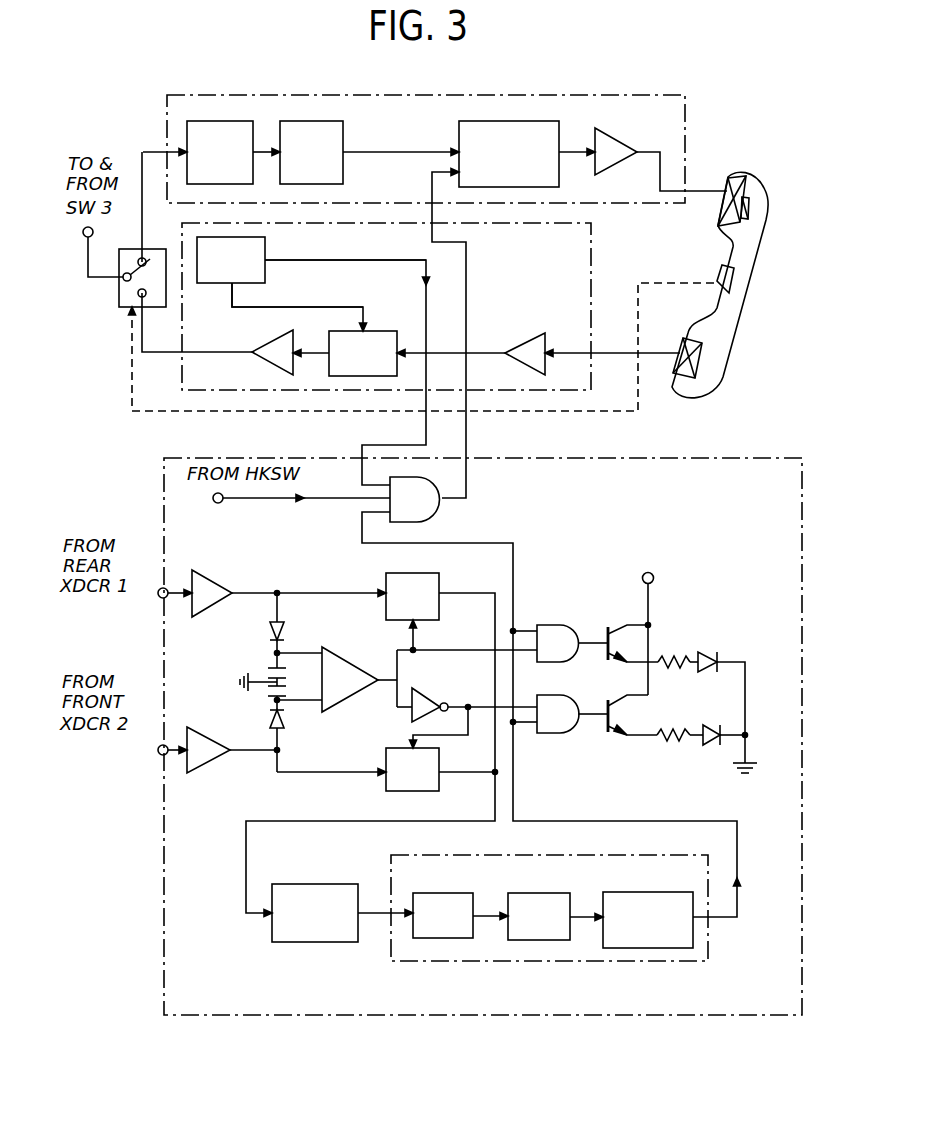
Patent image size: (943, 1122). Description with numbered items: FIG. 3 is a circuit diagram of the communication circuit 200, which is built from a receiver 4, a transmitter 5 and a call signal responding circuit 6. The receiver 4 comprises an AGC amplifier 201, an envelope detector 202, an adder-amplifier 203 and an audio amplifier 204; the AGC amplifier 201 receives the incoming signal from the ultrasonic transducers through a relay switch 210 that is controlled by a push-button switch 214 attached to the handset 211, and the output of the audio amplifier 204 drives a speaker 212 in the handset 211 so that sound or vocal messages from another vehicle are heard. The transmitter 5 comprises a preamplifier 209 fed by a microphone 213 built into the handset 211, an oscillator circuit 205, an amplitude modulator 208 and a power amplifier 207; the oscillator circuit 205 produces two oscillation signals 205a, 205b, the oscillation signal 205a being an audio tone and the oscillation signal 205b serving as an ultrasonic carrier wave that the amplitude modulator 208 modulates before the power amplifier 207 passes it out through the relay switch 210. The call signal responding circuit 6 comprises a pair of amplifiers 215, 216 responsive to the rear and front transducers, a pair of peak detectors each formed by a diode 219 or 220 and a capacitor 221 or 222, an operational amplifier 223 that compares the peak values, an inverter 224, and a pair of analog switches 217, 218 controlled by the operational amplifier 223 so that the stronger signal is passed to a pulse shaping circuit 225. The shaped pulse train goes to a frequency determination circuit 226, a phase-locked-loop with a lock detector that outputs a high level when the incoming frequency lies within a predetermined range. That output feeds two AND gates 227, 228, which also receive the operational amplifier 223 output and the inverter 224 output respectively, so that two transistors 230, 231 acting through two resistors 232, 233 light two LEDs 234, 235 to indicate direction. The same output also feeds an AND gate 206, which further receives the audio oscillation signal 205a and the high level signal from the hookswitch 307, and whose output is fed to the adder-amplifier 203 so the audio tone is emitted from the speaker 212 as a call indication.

The communication circuit 200 is at (147, 108).
The receiver 4 is at (663, 95).
The transmitter 5 is at (591, 295).
The call signal responding circuit 6 is at (740, 458).
The AGC amplifier 201 is at (213, 121).
The envelope detector 202 is at (353, 119).
The adder-amplifier 203 is at (459, 128).
The audio amplifier 204 is at (612, 142).
The oscillator circuit 205 is at (265, 251).
The oscillation signal 205a is at (405, 258).
The oscillation signal 205b is at (346, 307).
The AND gate 206 is at (436, 503).
The power amplifier 207 is at (275, 338).
The amplitude modulator 208 is at (385, 331).
The preamplifier 209 is at (535, 333).
The relay switch 210 is at (155, 248).
The handset 211 is at (733, 318).
The speaker 212 is at (737, 195).
The microphone 213 is at (690, 378).
The push-button switch 214 is at (733, 278).
The amplifier 215 is at (212, 578).
The amplifier 216 is at (213, 735).
The analog switch 217 is at (430, 574).
The analog switch 218 is at (425, 790).
The diode 219 is at (285, 628).
The diode 220 is at (285, 718).
The capacitor 221 is at (268, 670).
The capacitor 222 is at (265, 690).
The operational amplifier 223 is at (352, 660).
The inverter 224 is at (423, 690).
The pulse shaping circuit 225 is at (295, 884).
The frequency determination circuit 226 is at (545, 965).
The AND gate 227 is at (551, 625).
The AND gate 228 is at (541, 733).
The transistor 230 is at (605, 630).
The transistor 231 is at (605, 735).
The resistor 232 is at (670, 655).
The resistor 233 is at (672, 742).
The LED 234 is at (708, 656).
The LED 235 is at (705, 728).
The hookswitch 307 is at (301, 491).